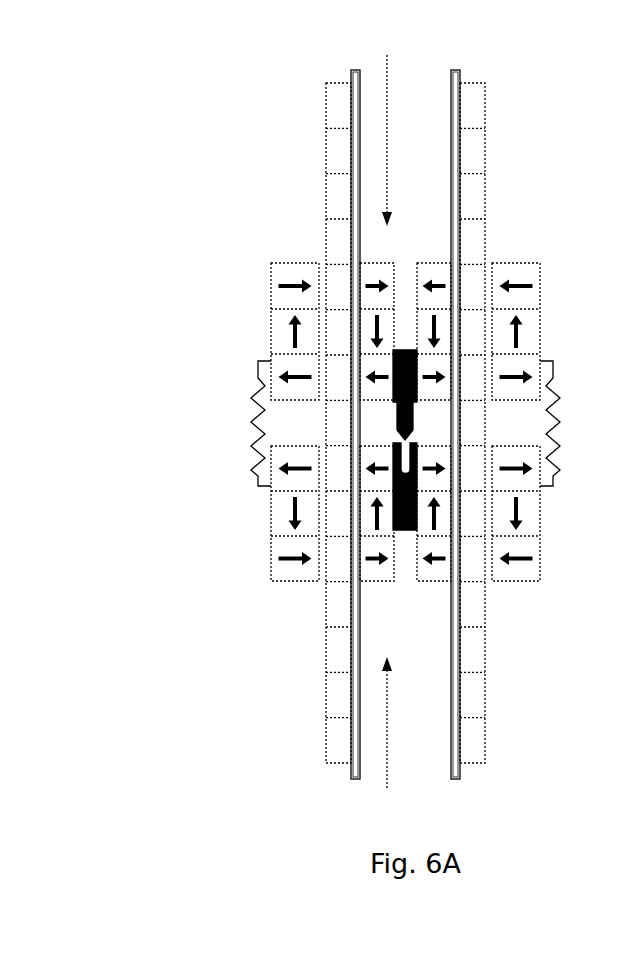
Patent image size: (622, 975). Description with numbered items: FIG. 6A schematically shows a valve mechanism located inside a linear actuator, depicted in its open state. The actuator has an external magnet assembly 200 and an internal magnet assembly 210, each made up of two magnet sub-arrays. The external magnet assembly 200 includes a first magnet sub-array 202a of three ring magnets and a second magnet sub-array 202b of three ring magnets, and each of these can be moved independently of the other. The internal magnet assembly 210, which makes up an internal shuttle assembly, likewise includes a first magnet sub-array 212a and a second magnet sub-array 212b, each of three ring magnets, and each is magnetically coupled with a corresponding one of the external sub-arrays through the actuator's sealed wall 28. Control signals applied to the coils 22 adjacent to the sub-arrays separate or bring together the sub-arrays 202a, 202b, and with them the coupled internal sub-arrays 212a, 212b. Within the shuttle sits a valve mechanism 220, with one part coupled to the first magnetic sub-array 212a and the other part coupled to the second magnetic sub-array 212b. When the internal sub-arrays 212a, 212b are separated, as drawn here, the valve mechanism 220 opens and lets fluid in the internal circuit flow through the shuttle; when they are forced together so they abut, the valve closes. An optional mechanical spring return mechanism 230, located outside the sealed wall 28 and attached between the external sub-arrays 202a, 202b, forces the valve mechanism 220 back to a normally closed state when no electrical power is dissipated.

The coils 22 is at (477, 90).
The sealed wall 28 is at (352, 70).
The external magnet assembly 200 is at (297, 237).
The first magnet sub-array 202a is at (347, 285).
The second magnet sub-array 202b is at (337, 579).
The internal magnet assembly 210 is at (389, 420).
The first magnet sub-array 212a is at (433, 270).
The second magnet sub-array 212b is at (433, 577).
The valve mechanism 220 is at (408, 440).
The mechanical spring return mechanism 230 is at (255, 428).